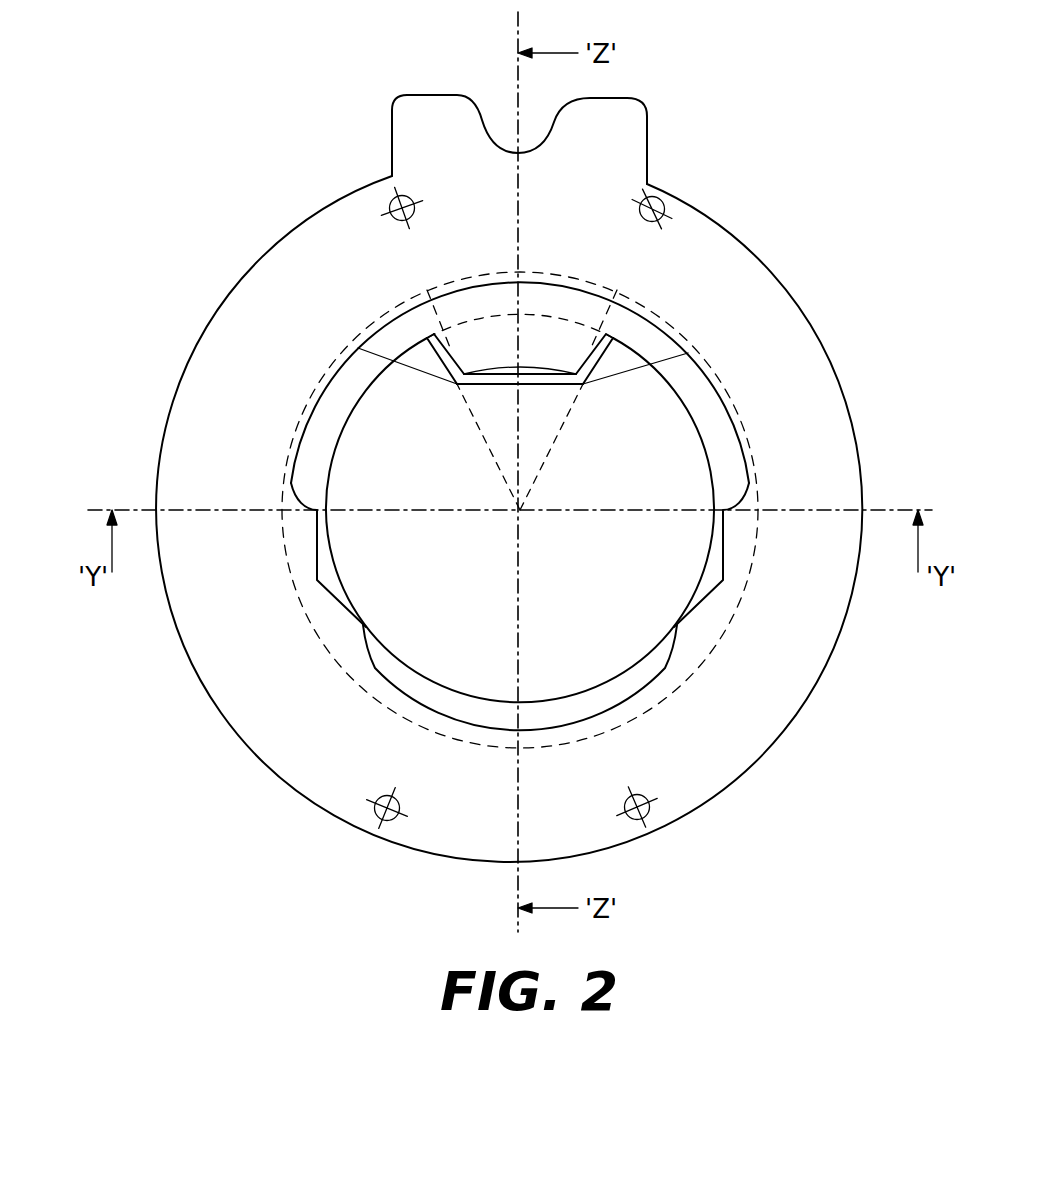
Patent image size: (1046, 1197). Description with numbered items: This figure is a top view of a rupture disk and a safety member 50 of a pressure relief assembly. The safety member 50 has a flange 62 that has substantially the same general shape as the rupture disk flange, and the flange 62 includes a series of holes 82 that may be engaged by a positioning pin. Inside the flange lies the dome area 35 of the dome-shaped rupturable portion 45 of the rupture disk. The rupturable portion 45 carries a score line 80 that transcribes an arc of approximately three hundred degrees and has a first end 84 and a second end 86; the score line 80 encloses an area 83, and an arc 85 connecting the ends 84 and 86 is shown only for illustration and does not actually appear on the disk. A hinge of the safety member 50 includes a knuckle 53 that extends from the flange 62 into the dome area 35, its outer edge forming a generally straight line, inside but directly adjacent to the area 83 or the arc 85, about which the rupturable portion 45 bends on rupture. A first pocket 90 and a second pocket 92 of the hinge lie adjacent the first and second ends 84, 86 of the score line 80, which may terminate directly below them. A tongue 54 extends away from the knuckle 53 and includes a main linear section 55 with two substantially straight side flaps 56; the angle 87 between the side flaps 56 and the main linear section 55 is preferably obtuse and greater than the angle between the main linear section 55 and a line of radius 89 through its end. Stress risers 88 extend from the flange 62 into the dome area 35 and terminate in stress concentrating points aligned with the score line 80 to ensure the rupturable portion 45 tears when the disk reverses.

The safety member 50 is at (820, 236).
The flange 62 is at (284, 240).
The holes 82 is at (392, 198).
The area circumscribed by the score line 83 is at (389, 474).
The score line 80 is at (688, 413).
The stress risers 88 is at (364, 622).
The dome area 35 is at (482, 574).
The rupturable portion 45 is at (633, 597).
The line of radius 89 is at (540, 468).
The arc connecting the ends of the score line 85 is at (477, 320).
The first end 84 is at (415, 362).
The first pocket 90 is at (420, 366).
The second end 86 is at (620, 344).
The second pocket 92 is at (625, 366).
The tongue 54 is at (550, 336).
The knuckle 53 is at (455, 386).
The side flaps 56 is at (455, 368).
The main linear section 55 is at (550, 388).
The angle 87 is at (567, 362).